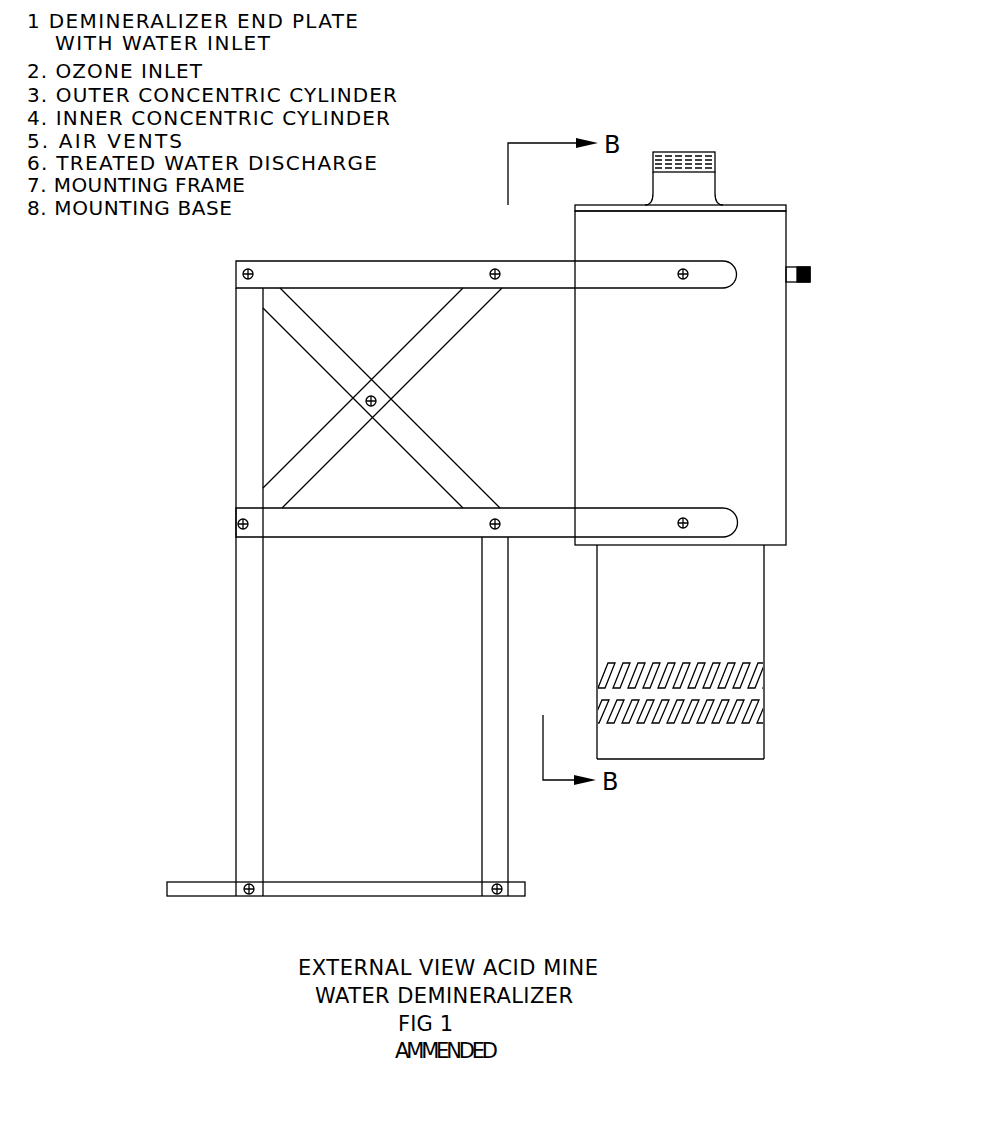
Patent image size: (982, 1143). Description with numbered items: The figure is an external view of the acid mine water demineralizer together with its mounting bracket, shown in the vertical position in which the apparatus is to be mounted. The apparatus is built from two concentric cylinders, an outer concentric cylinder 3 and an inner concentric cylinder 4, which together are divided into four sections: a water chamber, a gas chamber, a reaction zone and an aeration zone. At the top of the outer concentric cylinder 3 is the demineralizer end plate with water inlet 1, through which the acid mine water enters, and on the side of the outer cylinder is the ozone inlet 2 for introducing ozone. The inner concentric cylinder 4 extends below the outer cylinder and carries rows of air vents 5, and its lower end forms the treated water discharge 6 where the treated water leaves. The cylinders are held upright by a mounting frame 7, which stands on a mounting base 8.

The demineralizer end plate with water inlet 1 is at (745, 200).
The ozone inlet 2 is at (818, 290).
The outer concentric cylinder 3 is at (797, 436).
The inner concentric cylinder 4 is at (780, 590).
The air vents 5 is at (780, 710).
The treated water discharge 6 is at (746, 771).
The mounting frame 7 is at (374, 254).
The mounting base 8 is at (188, 866).